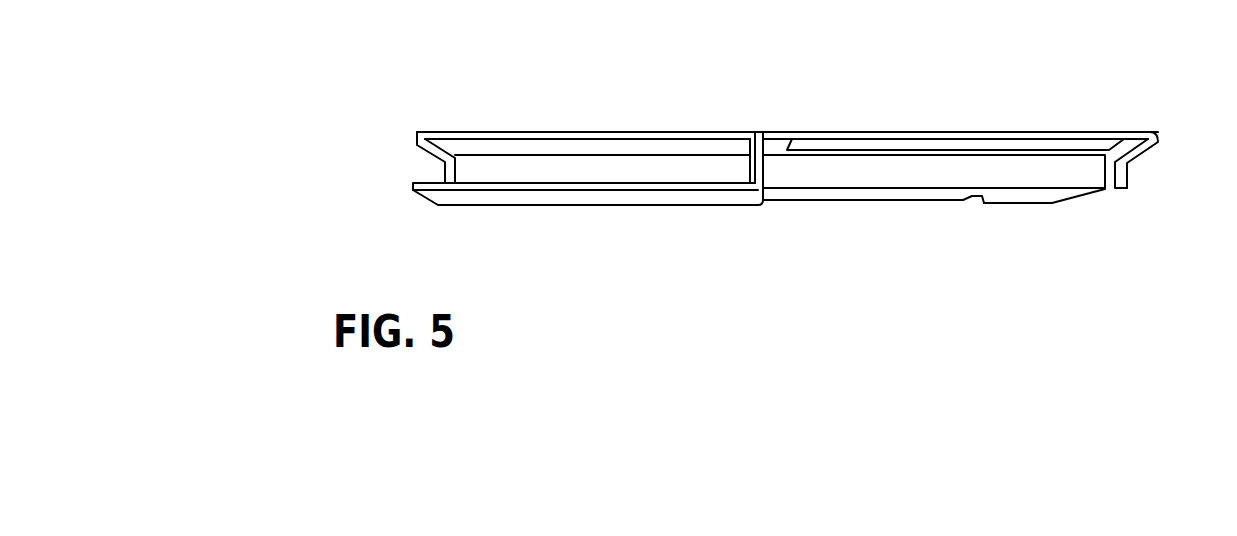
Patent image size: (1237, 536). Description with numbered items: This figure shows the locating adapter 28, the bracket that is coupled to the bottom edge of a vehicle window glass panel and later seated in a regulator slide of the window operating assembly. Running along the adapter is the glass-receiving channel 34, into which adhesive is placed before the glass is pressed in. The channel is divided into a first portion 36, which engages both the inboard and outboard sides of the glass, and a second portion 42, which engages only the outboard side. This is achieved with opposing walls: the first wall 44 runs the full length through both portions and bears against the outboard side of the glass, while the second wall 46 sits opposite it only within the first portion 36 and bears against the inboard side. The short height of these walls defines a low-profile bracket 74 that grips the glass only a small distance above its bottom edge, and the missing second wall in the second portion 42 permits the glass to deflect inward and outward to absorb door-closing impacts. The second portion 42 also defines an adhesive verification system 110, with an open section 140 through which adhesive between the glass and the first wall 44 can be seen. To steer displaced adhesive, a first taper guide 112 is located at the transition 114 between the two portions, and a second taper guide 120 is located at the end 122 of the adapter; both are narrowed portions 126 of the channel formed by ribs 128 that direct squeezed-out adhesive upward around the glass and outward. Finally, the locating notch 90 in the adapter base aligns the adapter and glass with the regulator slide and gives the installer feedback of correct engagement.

The locating adapter 28 is at (1016, 80).
The glass-receiving channel 34 is at (617, 168).
The first portion 36 is at (497, 172).
The second portion 42 is at (1068, 175).
The first wall 44 is at (847, 137).
The second wall 46 is at (650, 192).
The low-profile bracket 74 is at (1180, 151).
The locating notch 90 is at (972, 200).
The adhesive verification system 110 is at (1018, 237).
The first taper guide 112 is at (770, 148).
The transition 114 is at (767, 210).
The second taper guide 120 is at (413, 148).
The end 122 is at (413, 182).
The narrowed portions 126 is at (443, 133).
The ribs 128 is at (750, 167).
The open section 140 is at (1132, 195).